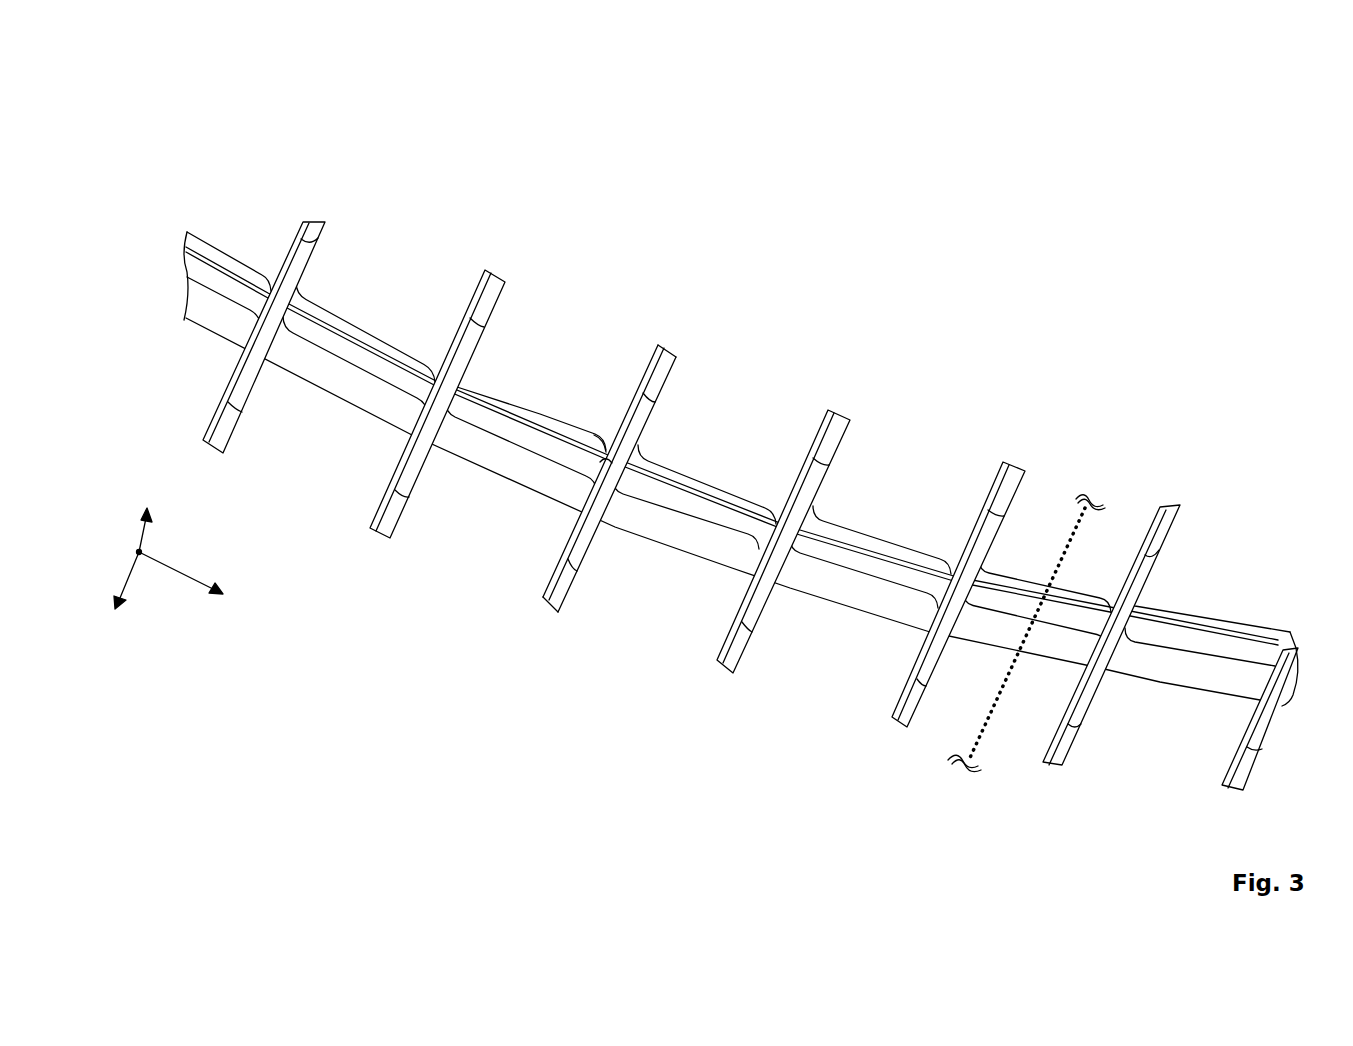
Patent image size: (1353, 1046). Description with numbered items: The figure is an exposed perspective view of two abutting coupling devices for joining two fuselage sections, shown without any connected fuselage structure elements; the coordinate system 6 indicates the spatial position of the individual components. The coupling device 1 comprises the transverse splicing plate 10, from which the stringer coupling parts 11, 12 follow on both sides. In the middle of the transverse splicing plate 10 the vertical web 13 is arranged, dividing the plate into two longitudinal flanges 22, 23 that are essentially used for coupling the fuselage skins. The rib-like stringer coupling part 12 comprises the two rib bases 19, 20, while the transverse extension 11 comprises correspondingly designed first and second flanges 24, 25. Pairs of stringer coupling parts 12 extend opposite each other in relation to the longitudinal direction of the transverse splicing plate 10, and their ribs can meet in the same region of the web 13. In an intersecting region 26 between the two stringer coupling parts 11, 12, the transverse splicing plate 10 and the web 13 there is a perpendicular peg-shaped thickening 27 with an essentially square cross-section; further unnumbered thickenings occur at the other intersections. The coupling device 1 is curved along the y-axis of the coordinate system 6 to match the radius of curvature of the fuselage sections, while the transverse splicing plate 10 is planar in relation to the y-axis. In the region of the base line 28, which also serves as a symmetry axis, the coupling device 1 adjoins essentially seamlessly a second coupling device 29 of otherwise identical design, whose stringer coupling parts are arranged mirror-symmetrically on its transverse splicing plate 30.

The coupling device 1 is at (605, 155).
The xyz-coordinate system 6 is at (141, 554).
The transverse splicing plate 10 is at (820, 592).
The transverse extension 11 is at (665, 357).
The stringer coupling part 12 is at (545, 607).
The vertical web 13 is at (522, 430).
The rib base of the stringer coupling part 19 is at (567, 545).
The rib base of the stringer coupling part 20 is at (587, 553).
The longitudinal flange 22 is at (352, 328).
The longitudinal flange 23 is at (337, 388).
The first flange 24 is at (662, 372).
The second flange 25 is at (668, 385).
The intersecting region 26 is at (635, 455).
The peg-shaped thickening 27 is at (603, 463).
The base line 28 is at (1073, 530).
The second coupling device 29 is at (1252, 325).
The transverse splicing plate 30 is at (1213, 627).